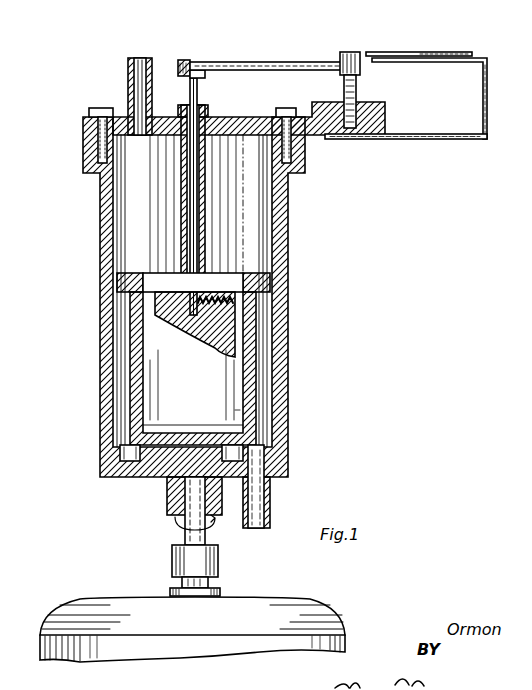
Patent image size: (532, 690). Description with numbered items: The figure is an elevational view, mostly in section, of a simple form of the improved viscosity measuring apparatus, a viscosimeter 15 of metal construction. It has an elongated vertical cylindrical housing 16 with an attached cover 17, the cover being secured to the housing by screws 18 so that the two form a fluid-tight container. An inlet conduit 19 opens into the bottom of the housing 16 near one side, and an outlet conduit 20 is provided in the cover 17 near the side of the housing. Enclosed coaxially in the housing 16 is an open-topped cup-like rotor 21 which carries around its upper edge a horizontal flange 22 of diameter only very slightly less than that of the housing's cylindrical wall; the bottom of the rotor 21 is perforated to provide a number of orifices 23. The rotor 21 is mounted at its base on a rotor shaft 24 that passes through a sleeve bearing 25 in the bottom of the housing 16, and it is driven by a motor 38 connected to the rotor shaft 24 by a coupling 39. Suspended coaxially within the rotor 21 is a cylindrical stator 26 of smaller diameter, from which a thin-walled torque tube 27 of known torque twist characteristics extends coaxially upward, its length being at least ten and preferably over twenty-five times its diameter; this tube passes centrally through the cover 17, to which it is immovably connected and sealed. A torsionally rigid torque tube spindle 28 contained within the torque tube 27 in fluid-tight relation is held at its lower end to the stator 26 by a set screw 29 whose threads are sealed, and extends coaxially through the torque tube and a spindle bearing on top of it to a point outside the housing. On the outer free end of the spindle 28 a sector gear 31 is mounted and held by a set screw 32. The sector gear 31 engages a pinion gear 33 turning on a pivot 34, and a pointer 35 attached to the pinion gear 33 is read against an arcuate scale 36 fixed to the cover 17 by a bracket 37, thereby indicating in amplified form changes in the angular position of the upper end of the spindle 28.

The viscosimeter 15 is at (298, 219).
The cylindrical housing 16 is at (288, 266).
The cover 17 is at (242, 118).
The screws 18 is at (97, 110).
The inlet conduit 19 is at (256, 528).
The outlet conduit 20 is at (150, 62).
The cup-like rotor 21 is at (252, 382).
The horizontal flange 22 is at (128, 277).
The orifices 23 is at (158, 445).
The rotor shaft 24 is at (190, 537).
The sleeve bearing 25 is at (172, 503).
The cylindrical stator 26 is at (220, 326).
The torque tube 27 is at (206, 170).
The torque tube spindle 28 is at (198, 212).
The set screw 29 is at (216, 292).
The sector gear 31 is at (247, 62).
The set screw 32 is at (178, 60).
The pinion gear 33 is at (360, 67).
The pivot 34 is at (358, 90).
The pointer 35 is at (400, 52).
The arcuate scale 36 is at (478, 60).
The bracket 37 is at (430, 140).
The motor 38 is at (100, 604).
The coupling 39 is at (172, 564).